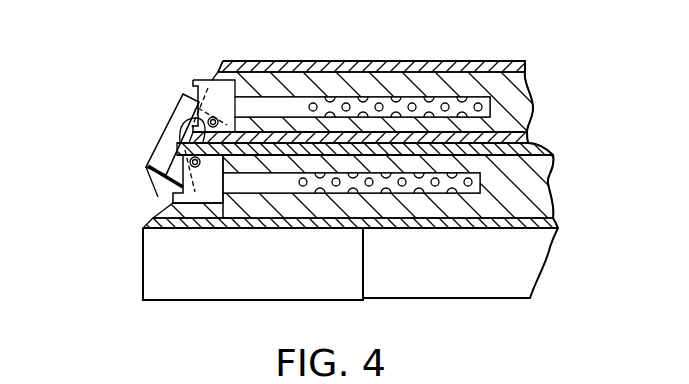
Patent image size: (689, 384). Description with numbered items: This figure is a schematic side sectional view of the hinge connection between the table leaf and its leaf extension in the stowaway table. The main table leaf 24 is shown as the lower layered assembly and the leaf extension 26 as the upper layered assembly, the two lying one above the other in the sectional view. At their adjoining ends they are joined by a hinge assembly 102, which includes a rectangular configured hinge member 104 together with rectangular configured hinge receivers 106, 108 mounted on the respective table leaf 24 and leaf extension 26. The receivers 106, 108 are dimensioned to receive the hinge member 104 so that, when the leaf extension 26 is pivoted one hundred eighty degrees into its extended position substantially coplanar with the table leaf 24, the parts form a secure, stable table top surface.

The main table leaf 24 is at (548, 178).
The leaf extension 26 is at (347, 61).
The hinge assembly 102 is at (152, 129).
The hinge member 104 is at (148, 167).
The hinge receiver 106 is at (172, 215).
The hinge receiver 108 is at (205, 80).